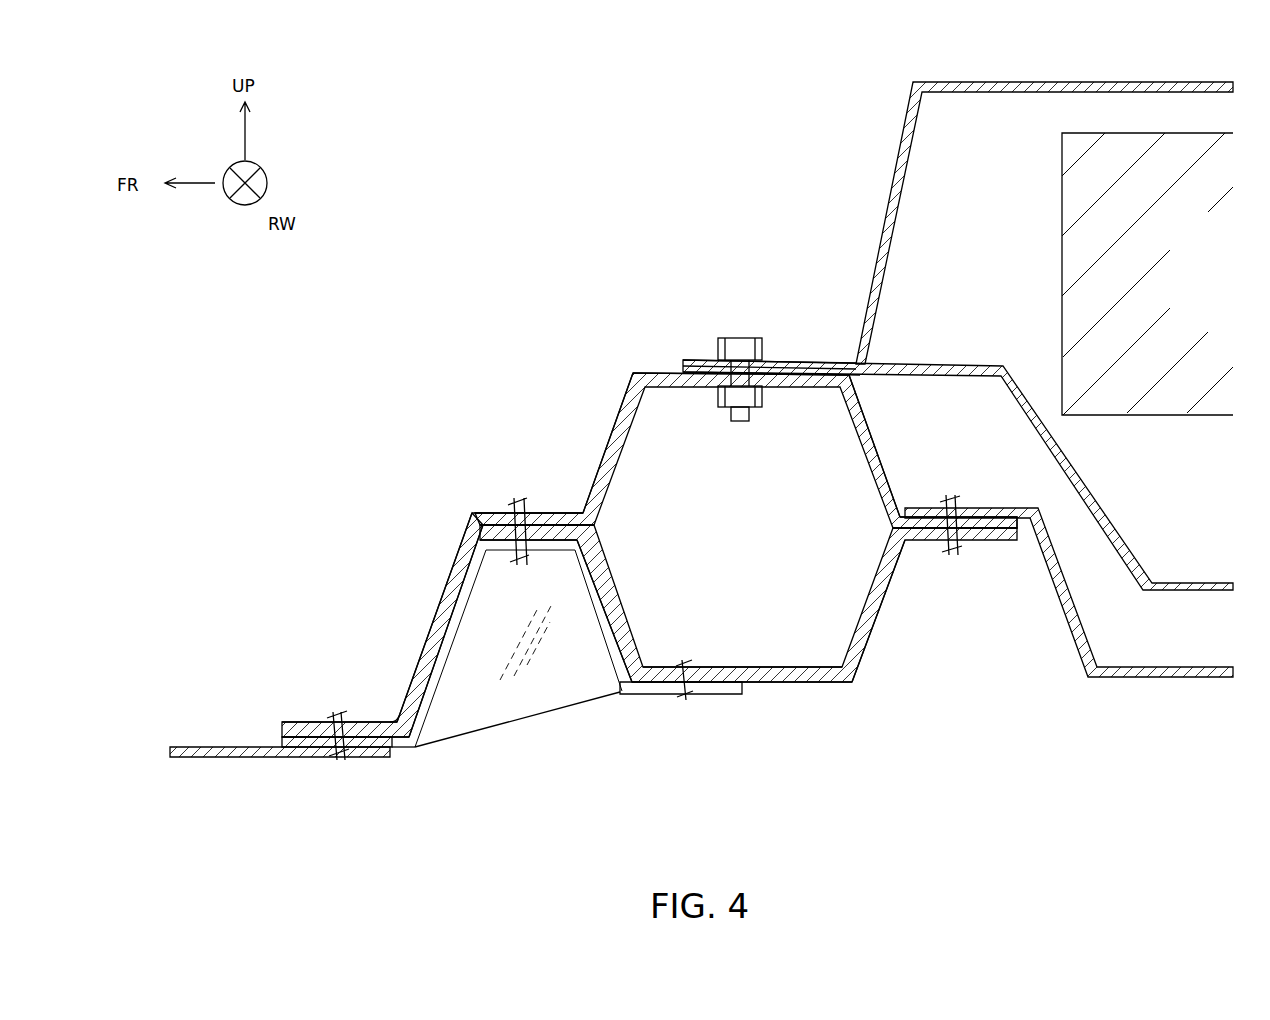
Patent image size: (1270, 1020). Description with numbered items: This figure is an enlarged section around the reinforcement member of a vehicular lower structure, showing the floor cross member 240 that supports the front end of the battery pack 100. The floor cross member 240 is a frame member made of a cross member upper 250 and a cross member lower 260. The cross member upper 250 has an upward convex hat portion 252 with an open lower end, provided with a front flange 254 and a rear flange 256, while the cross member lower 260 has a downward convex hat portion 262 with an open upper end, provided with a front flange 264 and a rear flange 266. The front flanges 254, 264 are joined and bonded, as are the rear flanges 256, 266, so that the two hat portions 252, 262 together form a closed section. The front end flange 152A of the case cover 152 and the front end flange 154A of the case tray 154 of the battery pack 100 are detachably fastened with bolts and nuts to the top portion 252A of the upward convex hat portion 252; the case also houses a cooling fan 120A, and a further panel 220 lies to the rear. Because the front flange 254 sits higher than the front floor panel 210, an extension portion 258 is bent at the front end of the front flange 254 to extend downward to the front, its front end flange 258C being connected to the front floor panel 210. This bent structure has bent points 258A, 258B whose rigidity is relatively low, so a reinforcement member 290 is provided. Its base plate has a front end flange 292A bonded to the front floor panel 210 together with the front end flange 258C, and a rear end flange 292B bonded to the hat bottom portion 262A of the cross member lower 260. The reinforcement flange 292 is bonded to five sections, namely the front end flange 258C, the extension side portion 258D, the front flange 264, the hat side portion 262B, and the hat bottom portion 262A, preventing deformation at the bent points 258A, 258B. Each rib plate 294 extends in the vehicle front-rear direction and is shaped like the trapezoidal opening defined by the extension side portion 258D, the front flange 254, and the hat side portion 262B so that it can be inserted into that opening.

The battery pack 100 is at (1082, 72).
The cooling fan 120A is at (1118, 415).
The case cover 152 is at (895, 165).
The front end flange of case cover 152A is at (793, 361).
The case tray 154 is at (1165, 582).
The front end flange of case tray 154A is at (838, 362).
The front floor panel 210 is at (190, 745).
The lower panel 220 is at (1128, 675).
The floor cross member 240 is at (700, 518).
The cross member upper 250 is at (606, 416).
The upward convex hat portion 252 is at (858, 425).
The top portion of upward convex hat portion 252A is at (669, 372).
The front flange of cross member upper 254 is at (498, 513).
The rear flange of cross member upper 256 is at (972, 508).
The extension portion 258 is at (415, 651).
The bent point 258A is at (462, 516).
The bent point 258B is at (393, 710).
The front end flange of extension portion 258C is at (307, 722).
The extension side portion 258D is at (450, 597).
The cross member lower 260 is at (887, 623).
The downward convex hat portion 262 is at (627, 633).
The hat bottom portion 262A is at (787, 682).
The hat side portion 262B is at (612, 542).
The front flange of cross member lower 264 is at (550, 513).
The rear flange of cross member lower 266 is at (995, 540).
The reinforcement member 290 is at (527, 731).
The reinforcement flange 292 is at (607, 640).
The front end flange of base plate 292A is at (300, 748).
The rear end flange of base plate 292B is at (710, 695).
The rib plate 294 is at (462, 735).